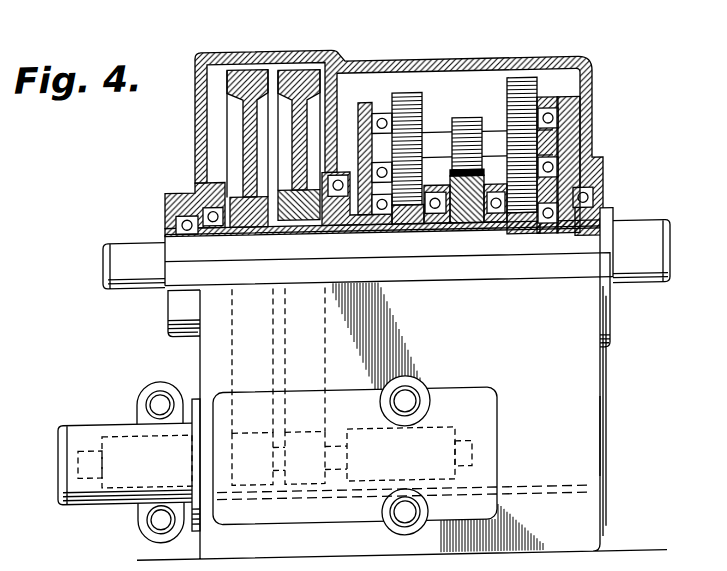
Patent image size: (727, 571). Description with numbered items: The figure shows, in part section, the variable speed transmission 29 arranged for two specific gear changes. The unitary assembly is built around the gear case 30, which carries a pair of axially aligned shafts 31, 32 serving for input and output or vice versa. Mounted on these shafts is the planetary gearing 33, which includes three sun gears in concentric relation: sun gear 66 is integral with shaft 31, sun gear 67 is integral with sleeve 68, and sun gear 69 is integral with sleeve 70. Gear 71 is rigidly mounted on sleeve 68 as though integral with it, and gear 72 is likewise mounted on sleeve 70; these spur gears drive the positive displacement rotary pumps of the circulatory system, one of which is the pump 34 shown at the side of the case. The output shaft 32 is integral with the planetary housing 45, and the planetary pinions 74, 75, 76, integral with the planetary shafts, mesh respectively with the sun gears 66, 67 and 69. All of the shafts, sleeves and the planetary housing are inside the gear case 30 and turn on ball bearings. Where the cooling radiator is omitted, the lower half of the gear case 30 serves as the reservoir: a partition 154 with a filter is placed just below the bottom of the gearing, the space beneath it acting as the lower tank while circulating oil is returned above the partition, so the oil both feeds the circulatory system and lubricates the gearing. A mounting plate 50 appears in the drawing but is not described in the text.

The variable speed transmission 29 is at (606, 486).
The gear case 30 is at (590, 412).
The shaft 31 is at (112, 270).
The shaft 32 is at (640, 230).
The planetary gearing 33 is at (559, 91).
The positive displacement rotary pump 34 is at (120, 430).
The planetary housing 45 is at (570, 113).
The mounting plate 50 is at (380, 472).
The sun gear 66 is at (533, 236).
The sun gear 67 is at (405, 218).
The sleeve 68 is at (390, 218).
The sun gear 69 is at (468, 220).
The sleeve 70 is at (317, 231).
The gear 71 is at (303, 71).
The gear 72 is at (243, 104).
The planetary pinion 74 is at (528, 80).
The planetary pinion 75 is at (405, 93).
The planetary pinion 76 is at (465, 121).
The partition 154 is at (530, 488).